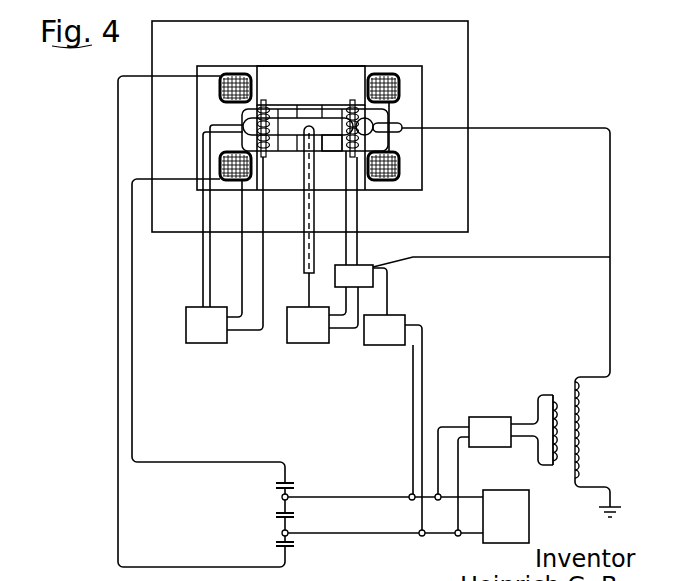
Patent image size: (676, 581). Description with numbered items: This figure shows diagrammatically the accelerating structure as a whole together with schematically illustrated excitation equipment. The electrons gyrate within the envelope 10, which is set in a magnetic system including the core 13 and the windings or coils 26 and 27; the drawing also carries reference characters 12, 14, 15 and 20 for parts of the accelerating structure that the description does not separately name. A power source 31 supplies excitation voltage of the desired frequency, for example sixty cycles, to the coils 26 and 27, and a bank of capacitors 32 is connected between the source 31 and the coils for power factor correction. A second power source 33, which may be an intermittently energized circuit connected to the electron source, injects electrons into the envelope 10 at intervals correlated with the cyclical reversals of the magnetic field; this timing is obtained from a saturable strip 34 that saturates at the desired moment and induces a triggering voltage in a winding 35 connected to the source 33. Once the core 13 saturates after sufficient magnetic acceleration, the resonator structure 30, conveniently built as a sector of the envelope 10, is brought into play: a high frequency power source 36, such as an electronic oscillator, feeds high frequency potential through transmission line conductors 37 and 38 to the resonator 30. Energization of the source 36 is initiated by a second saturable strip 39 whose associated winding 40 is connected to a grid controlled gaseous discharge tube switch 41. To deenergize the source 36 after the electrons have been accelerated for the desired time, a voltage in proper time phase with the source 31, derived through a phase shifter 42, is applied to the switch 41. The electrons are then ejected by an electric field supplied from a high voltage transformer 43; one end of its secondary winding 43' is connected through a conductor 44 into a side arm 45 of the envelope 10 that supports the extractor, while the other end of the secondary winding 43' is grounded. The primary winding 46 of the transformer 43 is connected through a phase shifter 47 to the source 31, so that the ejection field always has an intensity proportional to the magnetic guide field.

The envelope 10 is at (375, 123).
The discharge tube 12 is at (227, 125).
The core 13 is at (312, 108).
The magnet core block 14 is at (338, 72).
The magnetic frame 15 is at (288, 224).
The housing 20 is at (451, 31).
The coil 26 is at (220, 88).
The coil 27 is at (220, 162).
The resonator structure 30 is at (331, 138).
The power source 31 is at (527, 516).
The capacitors 32 is at (275, 544).
The second power source 33 is at (190, 336).
The saturable strip 34 is at (269, 100).
The winding 35 is at (273, 116).
The high frequency power source 36 is at (296, 341).
The transmission line conductor 37 is at (304, 263).
The transmission line conductor 38 is at (313, 250).
The saturable strip 39 is at (352, 100).
The winding 40 is at (358, 121).
The grid controlled gaseous discharge tube switch 41 is at (366, 269).
The phase shifter 42 is at (383, 343).
The high voltage transformer 43 is at (587, 433).
The secondary winding 43' is at (602, 439).
The conductor 44 is at (532, 126).
The side arm 45 is at (394, 131).
The primary winding 46 is at (560, 403).
The phase shifter 47 is at (478, 417).